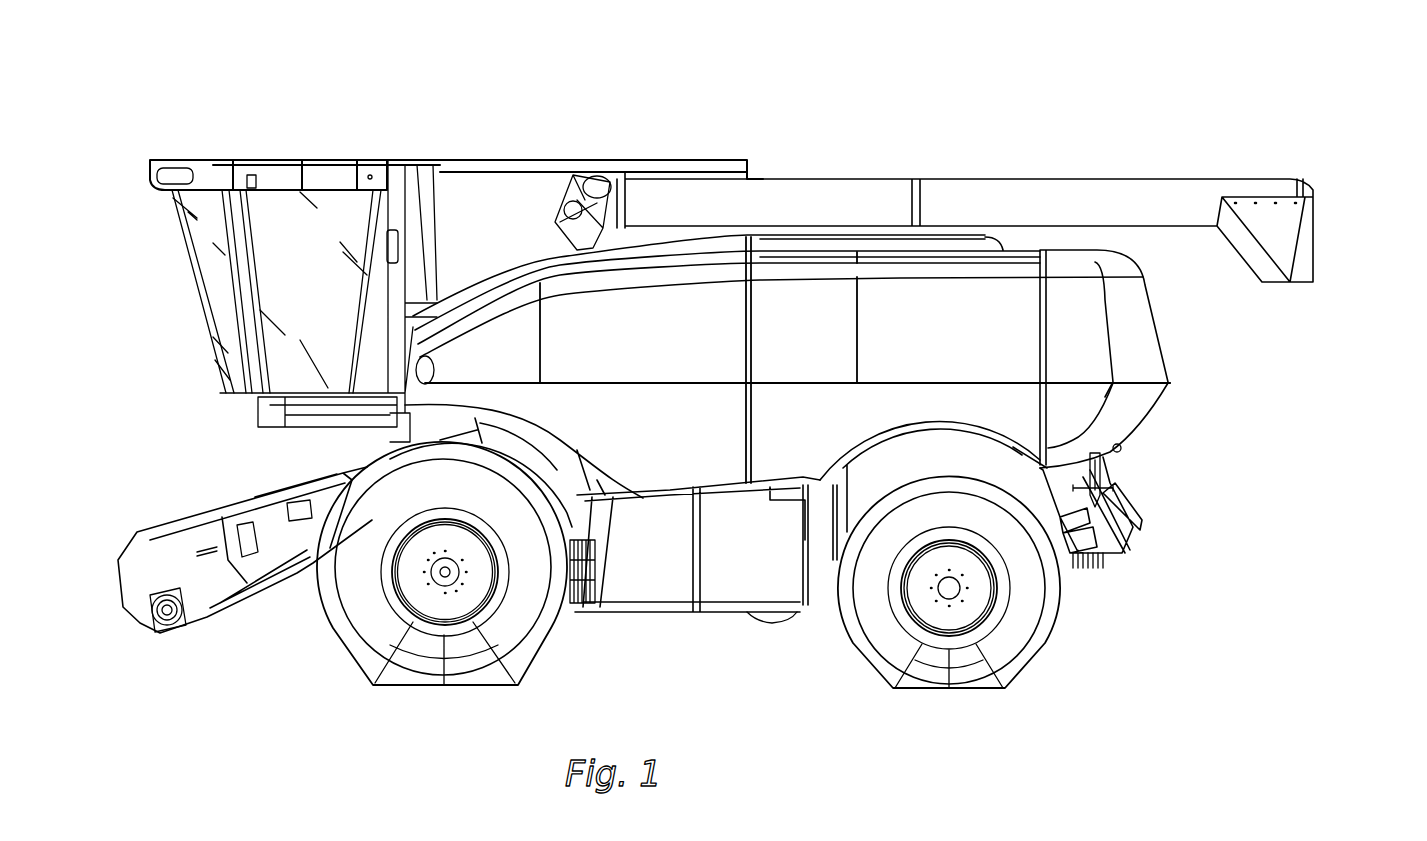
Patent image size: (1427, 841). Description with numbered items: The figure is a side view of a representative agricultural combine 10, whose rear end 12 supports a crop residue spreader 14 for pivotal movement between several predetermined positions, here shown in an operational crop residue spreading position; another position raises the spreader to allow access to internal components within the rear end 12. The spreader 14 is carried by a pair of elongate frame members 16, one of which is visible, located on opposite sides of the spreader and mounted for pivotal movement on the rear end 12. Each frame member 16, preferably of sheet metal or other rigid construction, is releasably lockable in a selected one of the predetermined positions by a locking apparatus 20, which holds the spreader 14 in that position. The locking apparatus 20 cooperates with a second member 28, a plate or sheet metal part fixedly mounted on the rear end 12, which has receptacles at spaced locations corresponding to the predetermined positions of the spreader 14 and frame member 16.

The agricultural combine 10 is at (1330, 152).
The rear end 12 is at (1168, 384).
The crop residue spreader 14 is at (1140, 530).
The elongate frame members 16 is at (1107, 467).
The locking apparatus 20 is at (1104, 478).
The second member 28 is at (1120, 448).